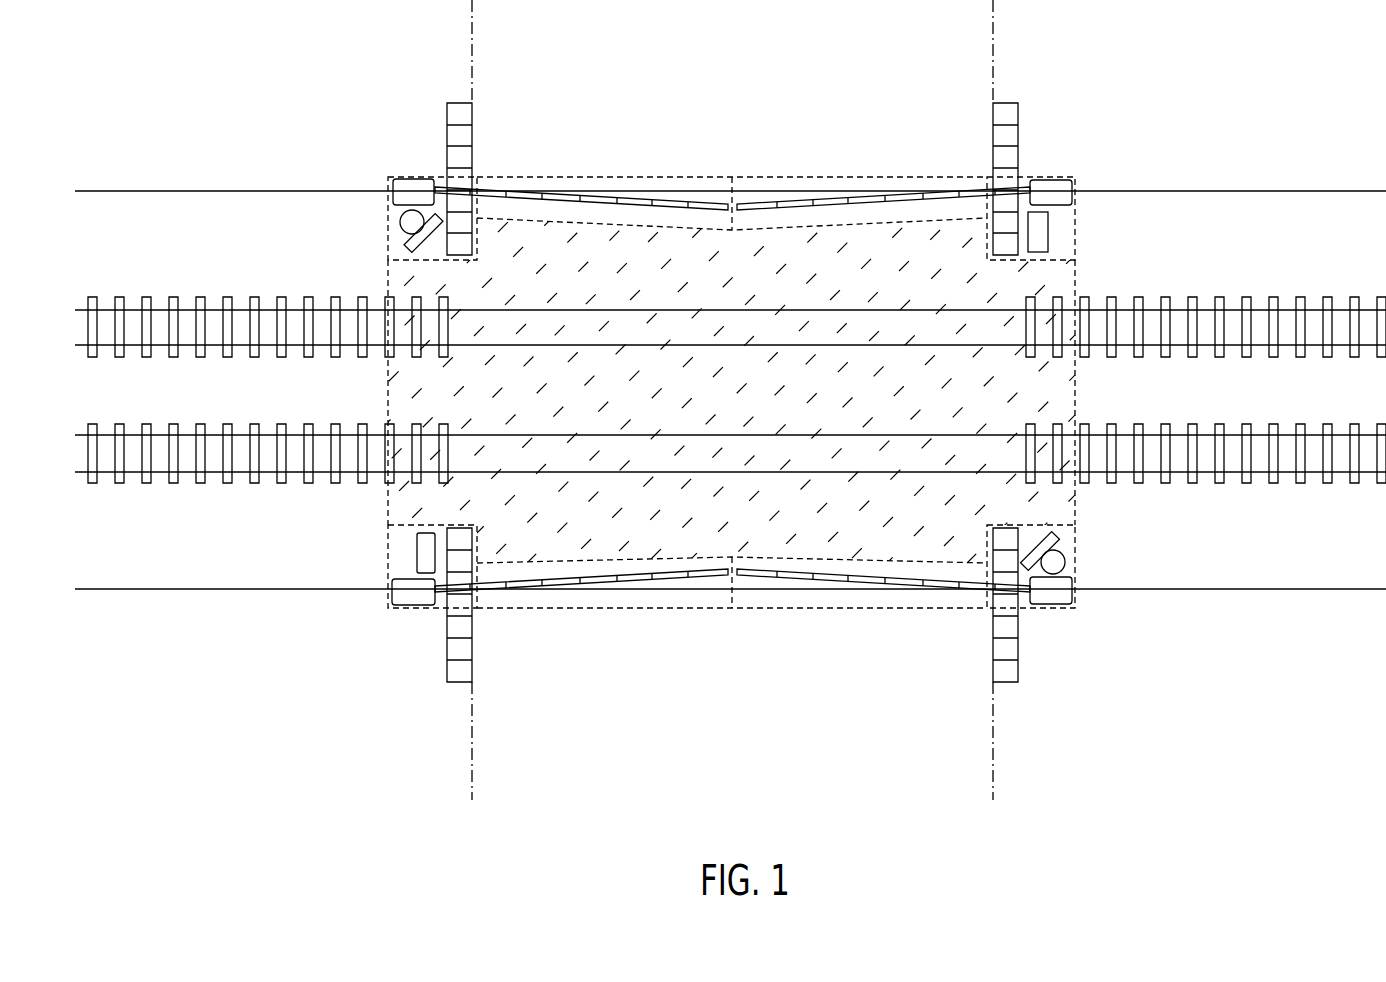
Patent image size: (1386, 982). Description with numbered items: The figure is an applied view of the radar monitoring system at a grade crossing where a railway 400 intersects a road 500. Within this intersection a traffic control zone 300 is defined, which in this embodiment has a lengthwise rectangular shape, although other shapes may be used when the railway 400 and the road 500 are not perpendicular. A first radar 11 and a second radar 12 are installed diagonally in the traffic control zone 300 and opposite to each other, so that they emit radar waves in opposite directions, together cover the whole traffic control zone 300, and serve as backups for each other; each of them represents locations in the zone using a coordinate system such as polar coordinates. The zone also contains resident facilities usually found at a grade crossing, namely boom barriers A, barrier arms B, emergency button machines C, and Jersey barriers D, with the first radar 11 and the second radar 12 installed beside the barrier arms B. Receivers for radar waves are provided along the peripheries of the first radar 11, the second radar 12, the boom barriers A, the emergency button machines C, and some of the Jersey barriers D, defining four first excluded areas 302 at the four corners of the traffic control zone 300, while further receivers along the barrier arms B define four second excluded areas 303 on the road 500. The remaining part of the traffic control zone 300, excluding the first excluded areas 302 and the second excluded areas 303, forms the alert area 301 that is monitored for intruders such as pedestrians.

The road 500 is at (997, 44).
The railway 400 is at (1287, 190).
The traffic control zone 300 is at (1038, 166).
The alert area 301 is at (1063, 275).
The first excluded areas 302 is at (1078, 222).
The second excluded areas 303 is at (826, 186).
The first radar 11 is at (405, 248).
The second radar 12 is at (1060, 540).
The boom barriers A is at (403, 597).
The barrier arms B is at (627, 580).
The emergency button machines C is at (420, 547).
The Jersey barriers D is at (455, 600).